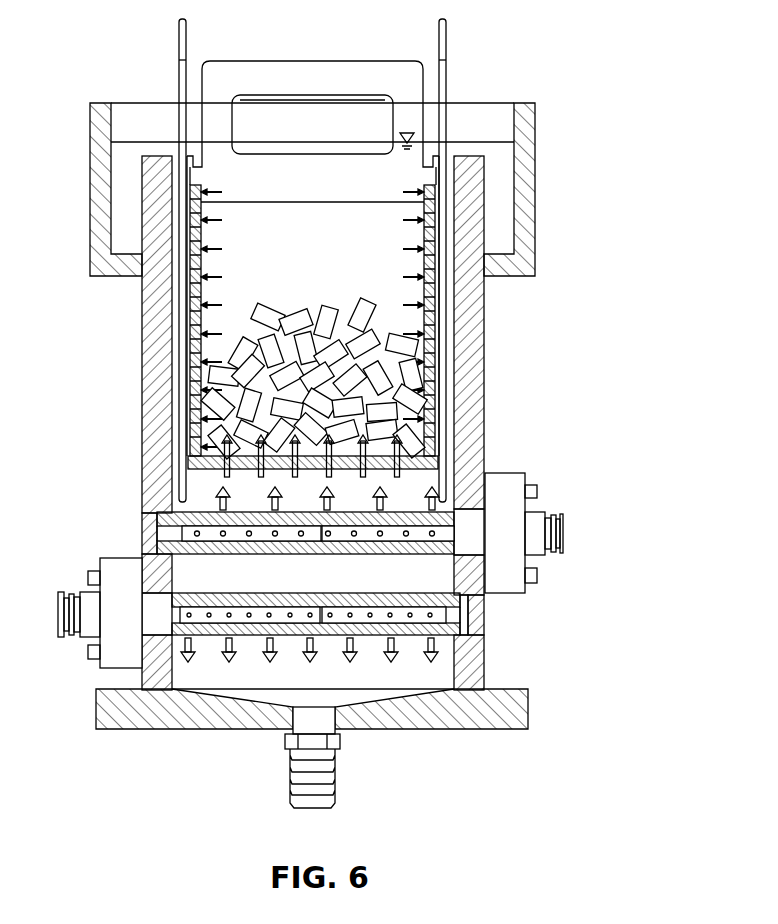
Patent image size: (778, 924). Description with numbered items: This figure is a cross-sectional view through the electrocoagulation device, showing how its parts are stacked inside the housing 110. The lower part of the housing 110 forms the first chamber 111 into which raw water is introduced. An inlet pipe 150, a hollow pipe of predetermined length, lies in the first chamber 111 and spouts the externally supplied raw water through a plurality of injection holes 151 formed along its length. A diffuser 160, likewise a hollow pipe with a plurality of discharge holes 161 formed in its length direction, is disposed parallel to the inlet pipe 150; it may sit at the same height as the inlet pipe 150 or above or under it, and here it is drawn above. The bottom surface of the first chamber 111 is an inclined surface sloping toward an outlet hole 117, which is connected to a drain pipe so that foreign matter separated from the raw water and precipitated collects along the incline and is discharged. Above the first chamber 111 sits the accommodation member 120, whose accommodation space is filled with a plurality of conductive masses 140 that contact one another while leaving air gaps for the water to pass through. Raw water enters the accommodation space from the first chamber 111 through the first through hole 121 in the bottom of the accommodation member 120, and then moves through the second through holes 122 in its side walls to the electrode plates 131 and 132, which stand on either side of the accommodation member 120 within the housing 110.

The housing 110 is at (552, 142).
The first chamber 111 is at (143, 568).
The outlet hole 117 is at (337, 717).
The accommodation member 120 is at (319, 275).
The first through hole 121 is at (190, 465).
The second through hole 122 is at (193, 366).
The electrode plate 131 is at (178, 37).
The electrode plate 132 is at (447, 37).
The conductive masses 140 is at (445, 363).
The inlet pipe 150 is at (462, 607).
The injection holes 151 is at (423, 617).
The diffuser 160 is at (425, 557).
The discharge holes 161 is at (432, 532).